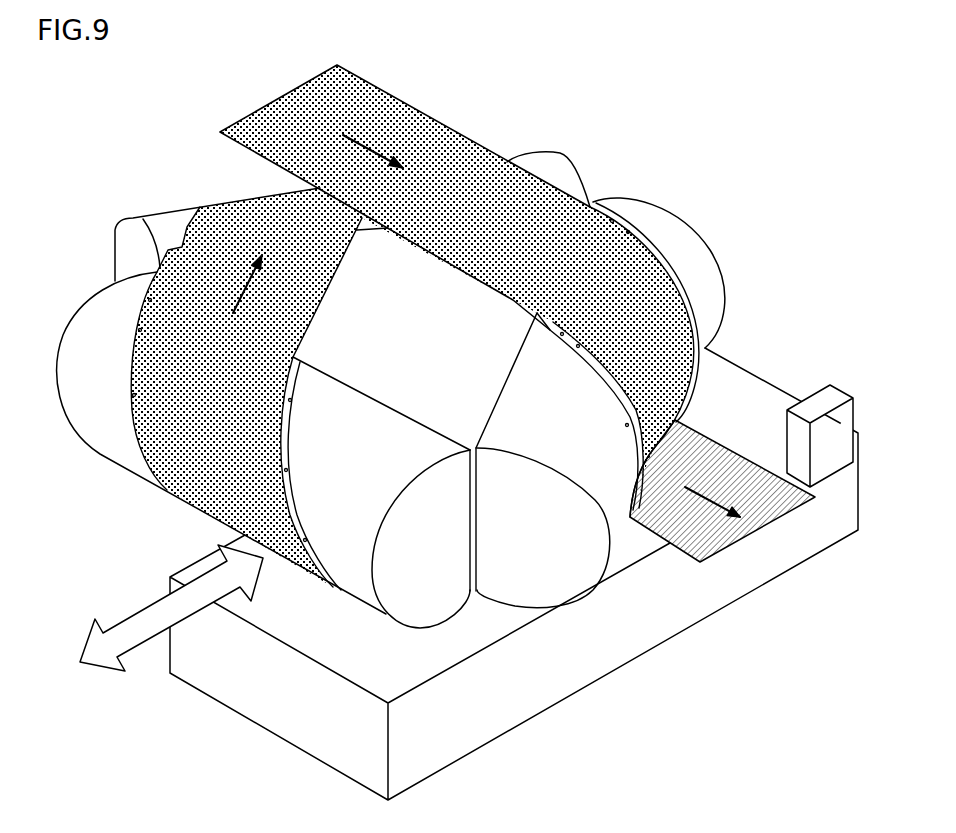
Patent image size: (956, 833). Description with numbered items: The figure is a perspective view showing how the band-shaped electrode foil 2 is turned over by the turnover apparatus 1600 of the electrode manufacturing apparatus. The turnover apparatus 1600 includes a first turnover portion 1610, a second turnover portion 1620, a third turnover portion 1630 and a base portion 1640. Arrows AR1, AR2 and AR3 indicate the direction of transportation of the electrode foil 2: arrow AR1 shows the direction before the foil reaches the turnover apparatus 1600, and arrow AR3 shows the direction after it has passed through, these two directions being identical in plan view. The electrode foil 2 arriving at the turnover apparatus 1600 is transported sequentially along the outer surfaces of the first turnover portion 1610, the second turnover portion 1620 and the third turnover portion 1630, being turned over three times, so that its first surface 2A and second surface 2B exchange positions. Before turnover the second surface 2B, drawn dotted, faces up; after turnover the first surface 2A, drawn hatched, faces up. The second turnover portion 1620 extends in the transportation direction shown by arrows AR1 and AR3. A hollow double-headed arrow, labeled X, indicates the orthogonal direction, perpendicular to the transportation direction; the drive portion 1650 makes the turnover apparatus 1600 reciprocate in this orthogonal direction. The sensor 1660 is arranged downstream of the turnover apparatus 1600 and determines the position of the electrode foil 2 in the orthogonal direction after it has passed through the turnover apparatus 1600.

The electrode foil 2 is at (313, 110).
The first surface 2A is at (727, 477).
The second surface 2B is at (363, 110).
The arrow AR1 is at (373, 152).
The arrow AR2 is at (243, 290).
The arrow AR3 is at (703, 500).
The turnover apparatus 1600 is at (83, 212).
The first turnover portion 1610 is at (684, 257).
The second turnover portion 1620 is at (103, 342).
The third turnover portion 1630 is at (542, 166).
The base portion 1640 is at (363, 313).
The drive portion 1650 is at (487, 723).
The sensor 1660 is at (820, 403).
The X axis direction X is at (107, 585).